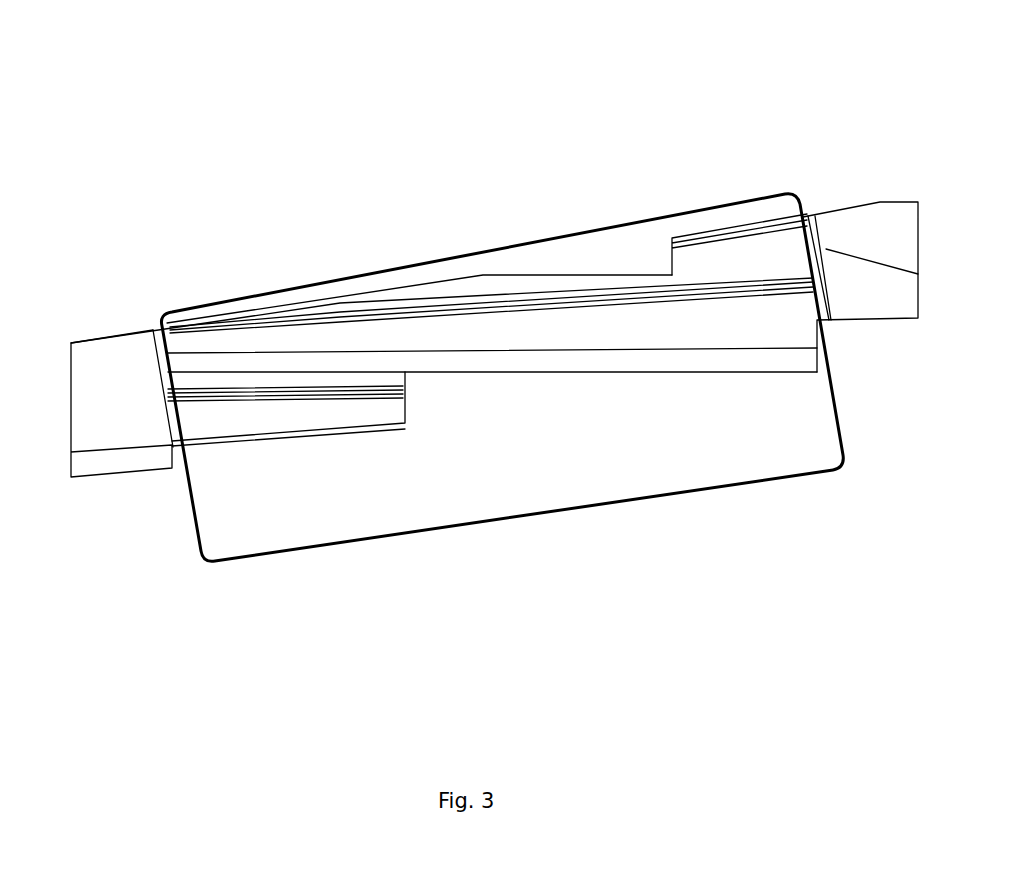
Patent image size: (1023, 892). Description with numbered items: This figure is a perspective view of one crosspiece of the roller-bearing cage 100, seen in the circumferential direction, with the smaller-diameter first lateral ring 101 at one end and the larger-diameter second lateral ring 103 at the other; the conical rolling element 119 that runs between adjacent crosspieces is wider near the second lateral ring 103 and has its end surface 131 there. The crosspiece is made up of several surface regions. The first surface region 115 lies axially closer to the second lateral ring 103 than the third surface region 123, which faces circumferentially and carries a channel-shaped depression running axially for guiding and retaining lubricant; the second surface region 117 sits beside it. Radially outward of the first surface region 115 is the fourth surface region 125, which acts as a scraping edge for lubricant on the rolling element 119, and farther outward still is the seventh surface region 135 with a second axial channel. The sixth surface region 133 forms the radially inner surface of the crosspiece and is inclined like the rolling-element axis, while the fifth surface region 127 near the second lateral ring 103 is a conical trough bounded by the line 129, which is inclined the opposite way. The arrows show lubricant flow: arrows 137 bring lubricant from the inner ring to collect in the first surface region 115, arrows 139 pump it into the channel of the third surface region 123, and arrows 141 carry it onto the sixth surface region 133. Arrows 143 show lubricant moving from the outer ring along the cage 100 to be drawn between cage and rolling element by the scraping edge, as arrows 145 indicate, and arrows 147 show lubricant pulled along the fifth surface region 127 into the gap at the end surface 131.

The cage 100 is at (866, 84).
The first edge or lateral ring 101 is at (108, 338).
The second edge or lateral ring 103 is at (910, 200).
The first surface region 115 is at (657, 373).
The second surface region 117 is at (410, 428).
The rolling element 119 is at (793, 460).
The third surface region 123 is at (262, 382).
The fourth surface region 125 is at (503, 307).
The fifth surface region 127 is at (880, 278).
The line 129 is at (890, 258).
The end surface 131 is at (799, 205).
The sixth surface region 133 is at (287, 443).
The seventh surface region 135 is at (720, 275).
The arrows 137 is at (243, 531).
The arrows 139 is at (725, 384).
The arrows 141 is at (363, 446).
The arrows 143 is at (214, 308).
The arrows 145 is at (326, 290).
The arrows 147 is at (839, 264).